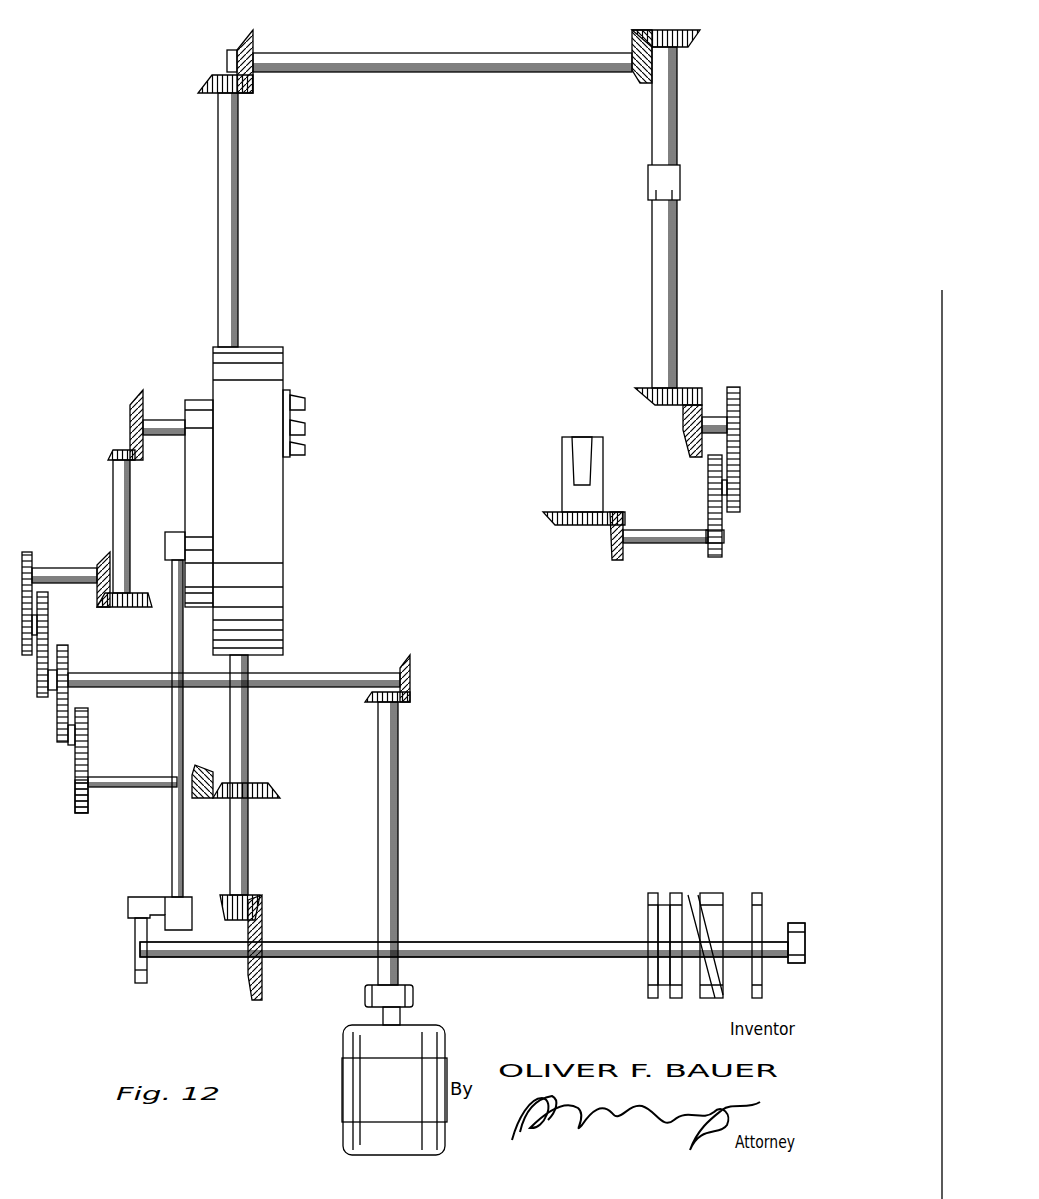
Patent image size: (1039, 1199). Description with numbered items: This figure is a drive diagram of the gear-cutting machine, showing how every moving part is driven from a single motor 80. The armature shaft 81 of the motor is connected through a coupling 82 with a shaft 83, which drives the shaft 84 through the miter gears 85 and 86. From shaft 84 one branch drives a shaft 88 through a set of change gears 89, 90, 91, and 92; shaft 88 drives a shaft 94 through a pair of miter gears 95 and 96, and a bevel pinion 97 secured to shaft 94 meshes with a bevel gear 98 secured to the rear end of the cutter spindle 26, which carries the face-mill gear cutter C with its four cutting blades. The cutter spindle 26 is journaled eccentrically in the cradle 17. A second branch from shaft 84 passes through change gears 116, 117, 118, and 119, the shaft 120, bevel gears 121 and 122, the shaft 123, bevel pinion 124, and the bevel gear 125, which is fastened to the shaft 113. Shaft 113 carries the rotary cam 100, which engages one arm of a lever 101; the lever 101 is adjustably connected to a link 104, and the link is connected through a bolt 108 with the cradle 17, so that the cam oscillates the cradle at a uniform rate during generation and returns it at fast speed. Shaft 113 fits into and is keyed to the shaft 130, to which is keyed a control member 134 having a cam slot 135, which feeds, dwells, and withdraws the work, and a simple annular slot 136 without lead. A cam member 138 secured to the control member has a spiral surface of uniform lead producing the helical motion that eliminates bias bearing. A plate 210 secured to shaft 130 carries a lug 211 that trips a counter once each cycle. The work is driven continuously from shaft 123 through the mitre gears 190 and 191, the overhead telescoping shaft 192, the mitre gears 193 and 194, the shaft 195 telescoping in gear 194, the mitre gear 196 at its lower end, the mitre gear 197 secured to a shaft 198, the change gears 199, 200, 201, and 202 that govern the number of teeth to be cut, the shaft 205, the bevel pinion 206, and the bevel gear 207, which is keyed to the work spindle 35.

The cradle 17 is at (272, 542).
The cutter spindle 26 is at (163, 420).
The work spindle 35 is at (562, 466).
The motor 80 is at (358, 1090).
The armature shaft 81 is at (400, 1016).
The coupling 82 is at (413, 990).
The shaft 83 is at (398, 880).
The shaft 84 is at (312, 673).
The miter gear 85 is at (368, 702).
The miter gear 86 is at (410, 670).
The shaft 88 is at (68, 568).
The change gear 89 is at (50, 690).
The change gear 90 is at (57, 620).
The change gear 91 is at (30, 655).
The change gear 92 is at (27, 552).
The shaft 94 is at (130, 533).
The miter gear 95 is at (97, 590).
The miter gear 96 is at (118, 607).
The bevel pinion 97 is at (110, 452).
The bevel gear 98 is at (130, 408).
The rotary cam 100 is at (135, 975).
The lever 101 is at (128, 905).
The link 104 is at (172, 848).
The bolt 108 is at (200, 535).
The shaft 113 is at (476, 942).
The change gear 116 is at (74, 650).
The change gear 117 is at (70, 740).
The change gear 118 is at (94, 718).
The change gear 119 is at (75, 802).
The shaft 120 is at (112, 777).
The bevel gear 121 is at (215, 750).
The bevel gear 122 is at (270, 777).
The shaft 123 is at (236, 258).
The bevel pinion 124 is at (228, 915).
The bevel gear 125 is at (262, 922).
The shaft 130 is at (464, 949).
The control member 134 is at (680, 998).
The cam slot 135 is at (688, 895).
The annular slot 136 is at (666, 883).
The cam member 138 is at (758, 893).
The mitre gear 190 is at (200, 84).
The mitre gear 191 is at (252, 48).
The overhead telescoping shaft 192 is at (436, 53).
The mitre gear 193 is at (640, 80).
The mitre gear 194 is at (688, 40).
The shaft 195 is at (670, 268).
The mitre gear 196 is at (660, 405).
The mitre gear 197 is at (690, 455).
The shaft 198 is at (712, 417).
The change gear 199 is at (749, 418).
The change gear 200 is at (740, 487).
The change gear 201 is at (708, 488).
The change gear 202 is at (724, 536).
The shaft 205 is at (668, 543).
The bevel pinion 206 is at (612, 558).
The bevel gear 207 is at (570, 525).
The plate 210 is at (796, 963).
The lug 211 is at (812, 914).
The face-mill gear cutter C is at (305, 427).